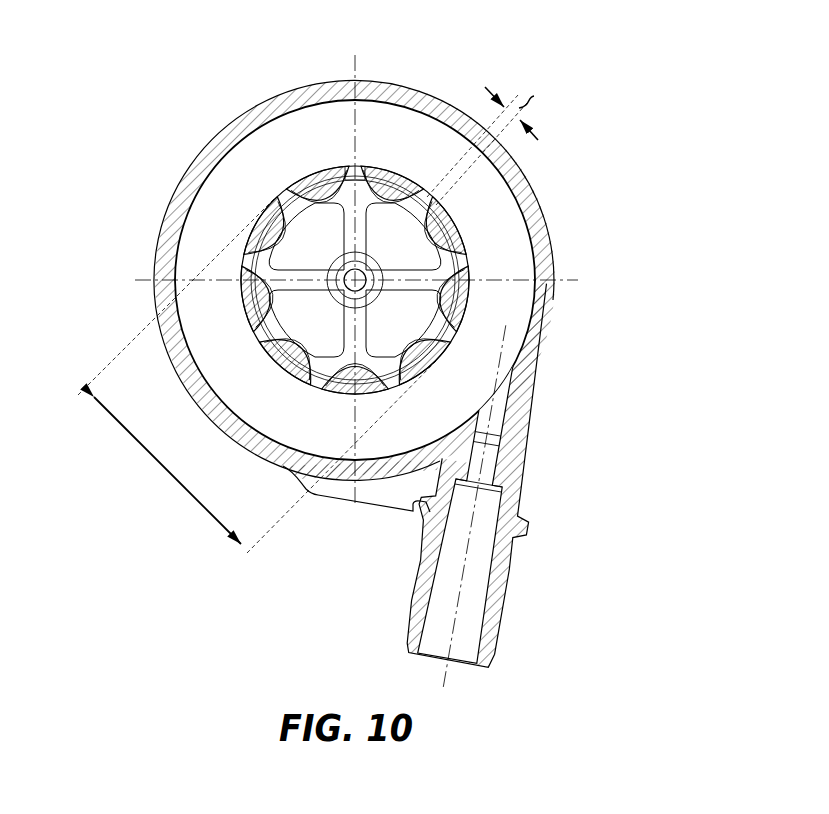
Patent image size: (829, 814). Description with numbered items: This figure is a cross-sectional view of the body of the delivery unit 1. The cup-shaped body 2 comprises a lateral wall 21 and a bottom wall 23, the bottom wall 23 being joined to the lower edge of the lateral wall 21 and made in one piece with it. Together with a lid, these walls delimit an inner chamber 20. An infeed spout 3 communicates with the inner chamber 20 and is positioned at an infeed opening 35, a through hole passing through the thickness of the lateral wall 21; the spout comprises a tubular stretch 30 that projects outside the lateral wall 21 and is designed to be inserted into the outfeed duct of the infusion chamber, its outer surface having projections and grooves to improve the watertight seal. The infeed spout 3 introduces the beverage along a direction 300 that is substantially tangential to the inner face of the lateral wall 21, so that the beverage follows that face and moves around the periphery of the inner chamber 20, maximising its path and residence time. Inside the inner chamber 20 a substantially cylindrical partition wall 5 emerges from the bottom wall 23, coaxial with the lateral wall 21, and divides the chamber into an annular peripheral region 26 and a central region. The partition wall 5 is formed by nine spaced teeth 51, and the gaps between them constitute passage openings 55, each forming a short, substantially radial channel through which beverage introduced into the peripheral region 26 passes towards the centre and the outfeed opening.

The delivery unit 1 is at (420, 355).
The cup-shaped body 2 is at (199, 128).
The infeed spout 3 is at (457, 483).
The partition wall 5 is at (433, 214).
The inner chamber 20 is at (295, 121).
The lateral wall 21 is at (546, 292).
The bottom wall 23 is at (205, 237).
The peripheral region 26 is at (450, 419).
The tubular stretch 30 is at (500, 588).
The infeed opening 35 is at (490, 401).
The teeth 51 is at (386, 180).
The passage openings 55 is at (425, 200).
The direction 300 is at (470, 545).